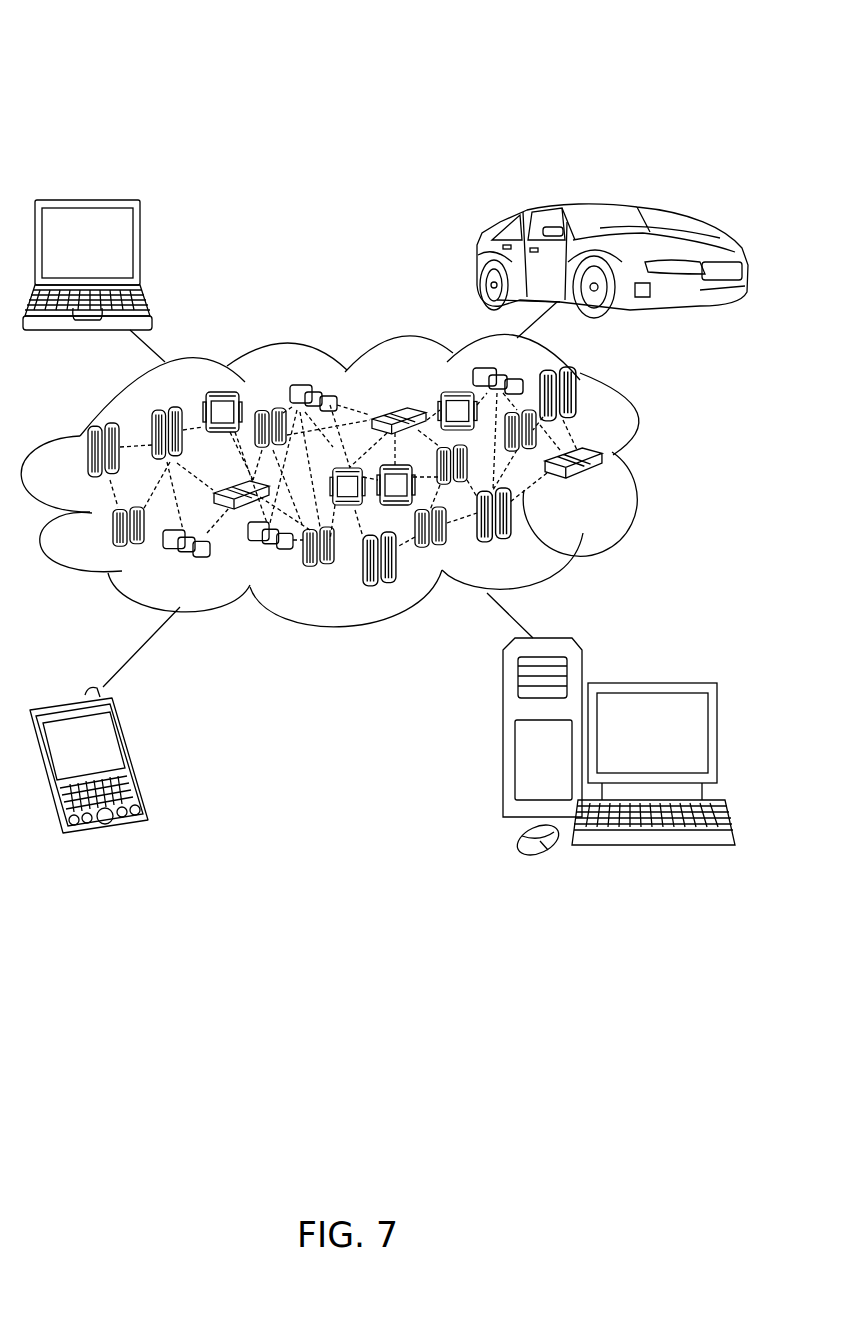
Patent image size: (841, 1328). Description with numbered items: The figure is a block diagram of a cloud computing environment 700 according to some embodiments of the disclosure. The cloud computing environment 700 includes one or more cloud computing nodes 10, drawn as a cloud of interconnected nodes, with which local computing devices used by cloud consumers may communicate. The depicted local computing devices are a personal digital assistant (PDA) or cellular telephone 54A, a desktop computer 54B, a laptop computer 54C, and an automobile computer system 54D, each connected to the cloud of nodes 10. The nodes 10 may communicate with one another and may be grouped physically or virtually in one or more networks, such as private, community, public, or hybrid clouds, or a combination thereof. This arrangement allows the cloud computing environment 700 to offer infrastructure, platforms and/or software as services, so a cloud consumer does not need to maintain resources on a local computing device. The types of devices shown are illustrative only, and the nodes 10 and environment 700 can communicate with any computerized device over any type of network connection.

The cloud computing environment 700 is at (270, 57).
The cloud computing nodes 10 is at (603, 484).
The personal digital assistant (PDA) or cellular telephone 54A is at (133, 755).
The desktop computer 54B is at (649, 682).
The laptop computer 54C is at (142, 248).
The automobile computer system 54D is at (481, 260).